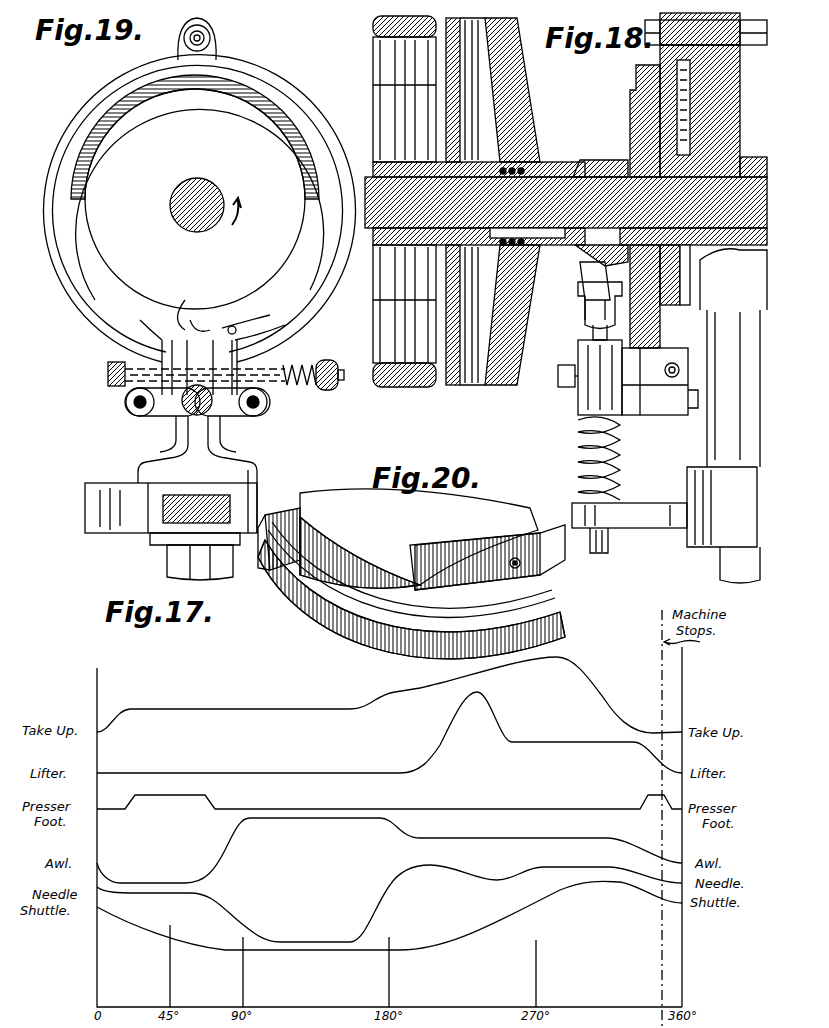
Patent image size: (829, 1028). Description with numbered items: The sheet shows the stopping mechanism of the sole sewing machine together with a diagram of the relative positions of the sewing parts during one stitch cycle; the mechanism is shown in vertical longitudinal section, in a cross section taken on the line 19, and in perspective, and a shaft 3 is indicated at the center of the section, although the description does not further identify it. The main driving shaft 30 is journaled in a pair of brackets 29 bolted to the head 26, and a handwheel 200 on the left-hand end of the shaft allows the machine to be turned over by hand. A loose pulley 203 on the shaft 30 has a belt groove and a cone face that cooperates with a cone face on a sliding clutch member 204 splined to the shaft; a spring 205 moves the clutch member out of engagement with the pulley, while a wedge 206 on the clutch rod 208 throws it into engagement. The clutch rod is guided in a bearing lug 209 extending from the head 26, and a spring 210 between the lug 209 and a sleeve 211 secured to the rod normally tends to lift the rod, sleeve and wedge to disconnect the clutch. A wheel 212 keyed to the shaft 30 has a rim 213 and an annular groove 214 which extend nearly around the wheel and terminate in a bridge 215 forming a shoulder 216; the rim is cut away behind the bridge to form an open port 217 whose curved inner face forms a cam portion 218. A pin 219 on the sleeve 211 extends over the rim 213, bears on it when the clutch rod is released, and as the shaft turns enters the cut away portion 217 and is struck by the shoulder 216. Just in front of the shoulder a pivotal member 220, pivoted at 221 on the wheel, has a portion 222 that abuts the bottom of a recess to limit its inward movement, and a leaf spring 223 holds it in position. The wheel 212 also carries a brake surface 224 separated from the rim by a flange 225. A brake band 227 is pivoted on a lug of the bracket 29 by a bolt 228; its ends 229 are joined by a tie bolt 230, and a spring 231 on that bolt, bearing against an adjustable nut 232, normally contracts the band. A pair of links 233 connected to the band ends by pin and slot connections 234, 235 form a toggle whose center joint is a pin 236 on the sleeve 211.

In FIG. 19, the shaft 3 is at (210, 190).
In FIG. 18, the section line 19 is at (621, 75).
In FIG. 19, the head 26 is at (171, 514).
In FIG. 18, the head 26 is at (700, 548).
In FIG. 19, the bracket 29 is at (197, 474).
In FIG. 18, the bracket 29 is at (720, 420).
In FIG. 18, the main driving shaft 30 is at (372, 240).
In FIG. 19, the handwheel 200 is at (330, 70).
In FIG. 18, the loose pulley 203 is at (478, 386).
In FIG. 18, the sliding clutch member 204 is at (520, 68).
In FIG. 18, the spring 205 is at (548, 158).
In FIG. 18, the wedge 206 is at (580, 162).
In FIG. 18, the clutch rod 208 is at (600, 553).
In FIG. 19, the bearing lug 209 is at (165, 545).
In FIG. 18, the bearing lug 209 is at (650, 510).
In FIG. 18, the spring 210 is at (578, 462).
In FIG. 18, the sleeve 211 is at (590, 395).
In FIG. 18, the wheel 212 is at (718, 75).
In FIG. 19, the rim 213 is at (278, 98).
In FIG. 18, the rim 213 is at (636, 100).
In FIG. 20, the rim 213 is at (275, 540).
In FIG. 19, the annular groove 214 is at (292, 135).
In FIG. 20, the annular groove 214 is at (318, 508).
In FIG. 19, the bridge 215 is at (168, 320).
In FIG. 20, the bridge 215 is at (382, 568).
In FIG. 19, the shoulder 216 is at (208, 339).
In FIG. 20, the shoulder 216 is at (412, 560).
In FIG. 19, the open port 217 is at (175, 333).
In FIG. 20, the open port 217 is at (300, 580).
In FIG. 19, the cam portion 218 is at (140, 300).
In FIG. 20, the cam portion 218 is at (310, 540).
In FIG. 19, the pin 219 is at (213, 348).
In FIG. 18, the pin 219 is at (660, 381).
In FIG. 18, the pivotal member 220 is at (732, 136).
In FIG. 20, the pivotal member 220 is at (440, 585).
In FIG. 19, the pivot 221 is at (250, 300).
In FIG. 20, the pivot 221 is at (508, 540).
In FIG. 20, the portion 222 is at (432, 620).
In FIG. 19, the leaf spring 223 is at (235, 322).
In FIG. 20, the leaf spring 223 is at (520, 612).
In FIG. 20, the brake surface 224 is at (411, 599).
In FIG. 18, the flange 225 is at (648, 60).
In FIG. 20, the flange 225 is at (330, 585).
In FIG. 19, the brake band 227 is at (212, 40).
In FIG. 18, the bolt 228 is at (706, 29).
In FIG. 19, the ends of the brake band 229 is at (130, 385).
In FIG. 19, the tie bolt 230 is at (187, 412).
In FIG. 18, the tie bolt 230 is at (680, 372).
In FIG. 19, the spring 231 is at (298, 366).
In FIG. 19, the adjustable nut 232 is at (332, 366).
In FIG. 19, the links 233 is at (246, 414).
In FIG. 19, the pin and slot connection 234 is at (262, 404).
In FIG. 19, the pin and slot connection 235 is at (134, 405).
In FIG. 19, the pin 236 is at (211, 471).
In FIG. 18, the pin 236 is at (640, 416).